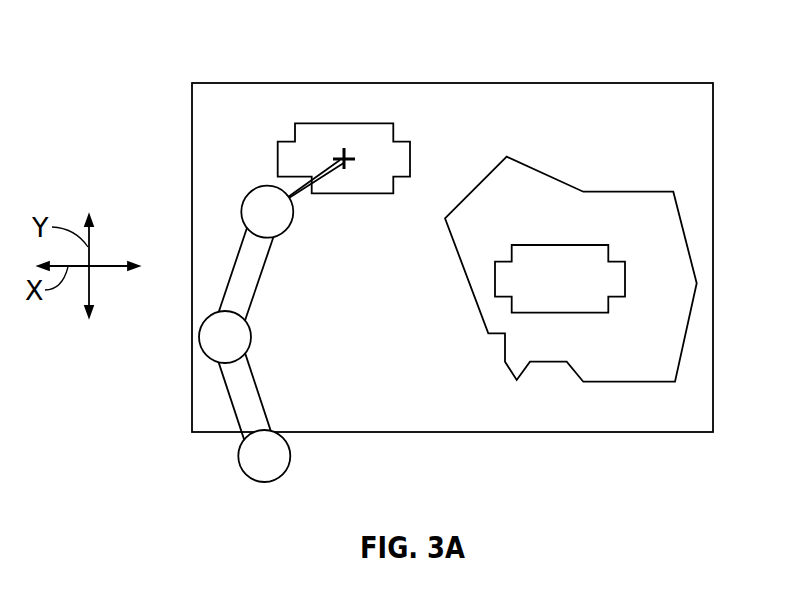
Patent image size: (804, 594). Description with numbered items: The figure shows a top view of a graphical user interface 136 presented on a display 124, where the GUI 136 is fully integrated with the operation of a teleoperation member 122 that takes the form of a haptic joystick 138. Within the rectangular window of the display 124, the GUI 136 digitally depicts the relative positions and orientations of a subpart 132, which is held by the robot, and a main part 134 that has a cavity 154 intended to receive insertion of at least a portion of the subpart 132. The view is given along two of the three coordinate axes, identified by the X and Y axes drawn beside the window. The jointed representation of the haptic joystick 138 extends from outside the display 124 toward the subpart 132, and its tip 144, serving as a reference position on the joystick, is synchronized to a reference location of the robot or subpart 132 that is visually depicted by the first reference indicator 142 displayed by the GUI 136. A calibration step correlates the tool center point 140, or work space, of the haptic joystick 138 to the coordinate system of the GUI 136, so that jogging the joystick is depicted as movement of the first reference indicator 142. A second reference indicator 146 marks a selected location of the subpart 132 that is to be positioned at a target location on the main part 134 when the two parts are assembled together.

The teleoperation member 122 is at (225, 328).
The display 124 is at (663, 82).
The subpart 132 is at (404, 146).
The main part 134 is at (677, 275).
The graphical user interface 136 is at (675, 157).
The haptic joystick 138 is at (259, 459).
The tool center point 140 is at (347, 167).
The first reference indicator 142 is at (382, 133).
The tip 144 is at (333, 159).
The second reference indicator 146 is at (346, 150).
The cavity 154 is at (583, 292).